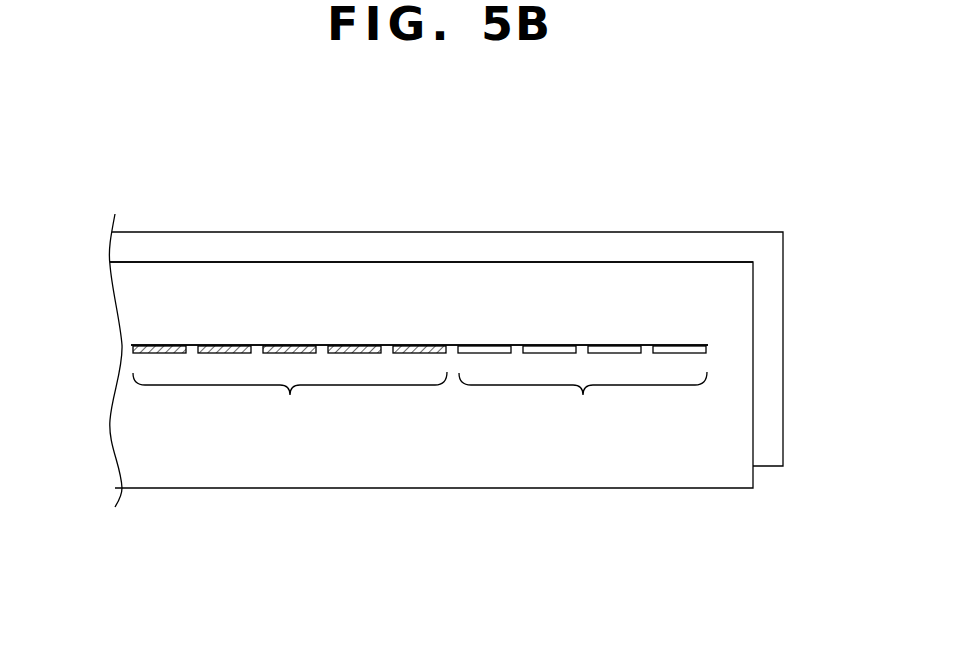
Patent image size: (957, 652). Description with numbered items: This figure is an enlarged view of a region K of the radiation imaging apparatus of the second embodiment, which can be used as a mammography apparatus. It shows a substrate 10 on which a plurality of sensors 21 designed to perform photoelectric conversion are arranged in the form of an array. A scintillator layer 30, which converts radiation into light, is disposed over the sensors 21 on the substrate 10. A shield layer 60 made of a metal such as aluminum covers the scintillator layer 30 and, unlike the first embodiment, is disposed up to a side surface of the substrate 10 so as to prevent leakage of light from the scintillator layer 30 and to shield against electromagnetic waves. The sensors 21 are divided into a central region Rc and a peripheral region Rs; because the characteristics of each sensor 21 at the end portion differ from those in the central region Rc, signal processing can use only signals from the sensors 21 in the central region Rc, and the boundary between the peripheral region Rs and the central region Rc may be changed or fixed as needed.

The region K k is at (146, 146).
The substrate 10 is at (690, 489).
The sensor 21 is at (695, 350).
The scintillator layer 30 is at (448, 306).
The shield layer 60 is at (687, 249).
The central region Rc is at (290, 400).
The peripheral region Rs is at (583, 400).